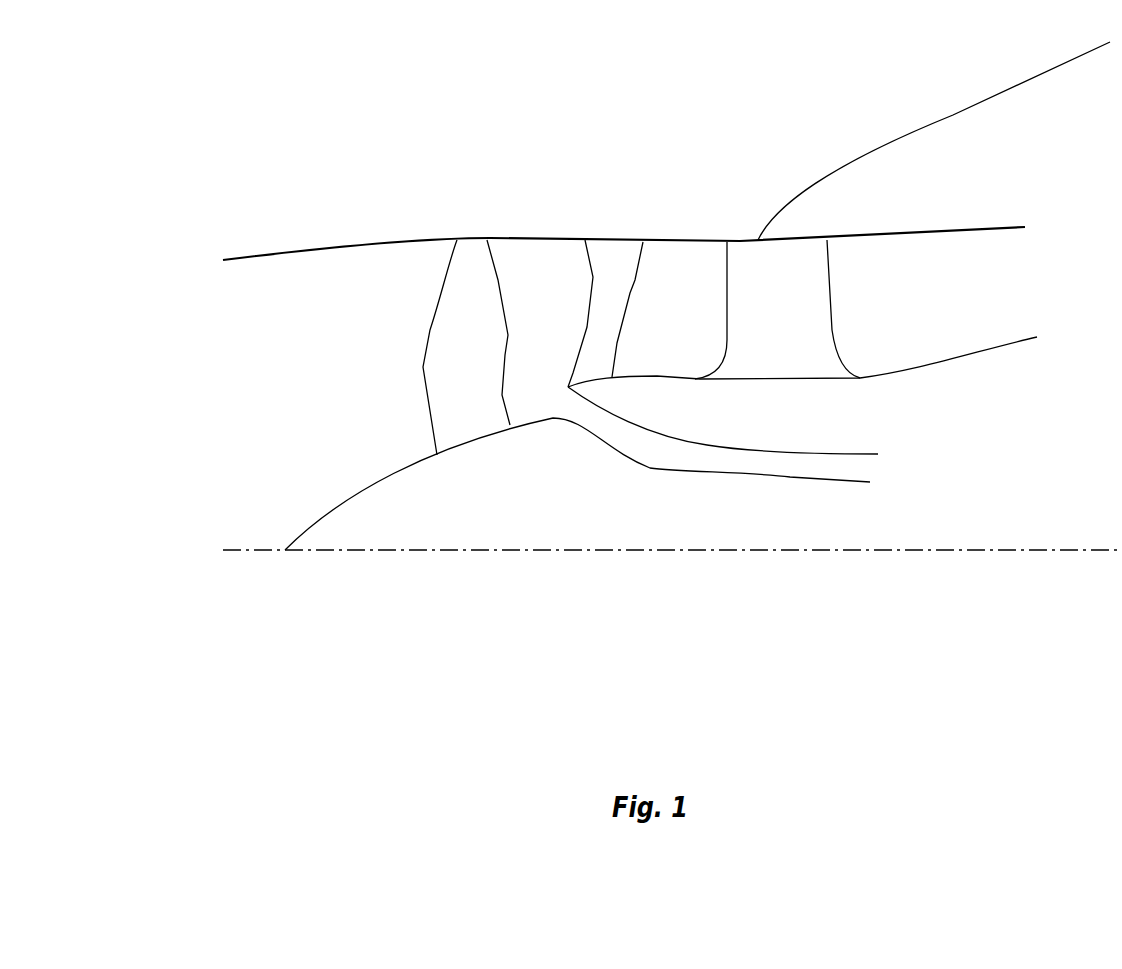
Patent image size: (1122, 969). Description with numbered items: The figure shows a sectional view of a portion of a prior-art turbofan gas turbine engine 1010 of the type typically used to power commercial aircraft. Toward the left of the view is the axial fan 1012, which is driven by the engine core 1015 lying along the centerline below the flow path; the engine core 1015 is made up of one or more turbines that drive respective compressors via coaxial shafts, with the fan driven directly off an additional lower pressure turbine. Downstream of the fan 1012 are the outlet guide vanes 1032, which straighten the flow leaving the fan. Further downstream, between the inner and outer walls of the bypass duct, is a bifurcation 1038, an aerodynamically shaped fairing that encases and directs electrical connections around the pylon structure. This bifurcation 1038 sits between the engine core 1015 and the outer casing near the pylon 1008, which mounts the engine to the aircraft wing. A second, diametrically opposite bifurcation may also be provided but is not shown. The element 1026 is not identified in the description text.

The pylon 1008 is at (952, 117).
The turbofan gas turbine engine 1010 is at (255, 192).
The axial fan 1012 is at (400, 366).
The engine core 1015 is at (798, 533).
The airfoil blade 1026 is at (463, 325).
The outlet guide vanes 1032 is at (612, 268).
The bifurcation 1038 is at (797, 308).